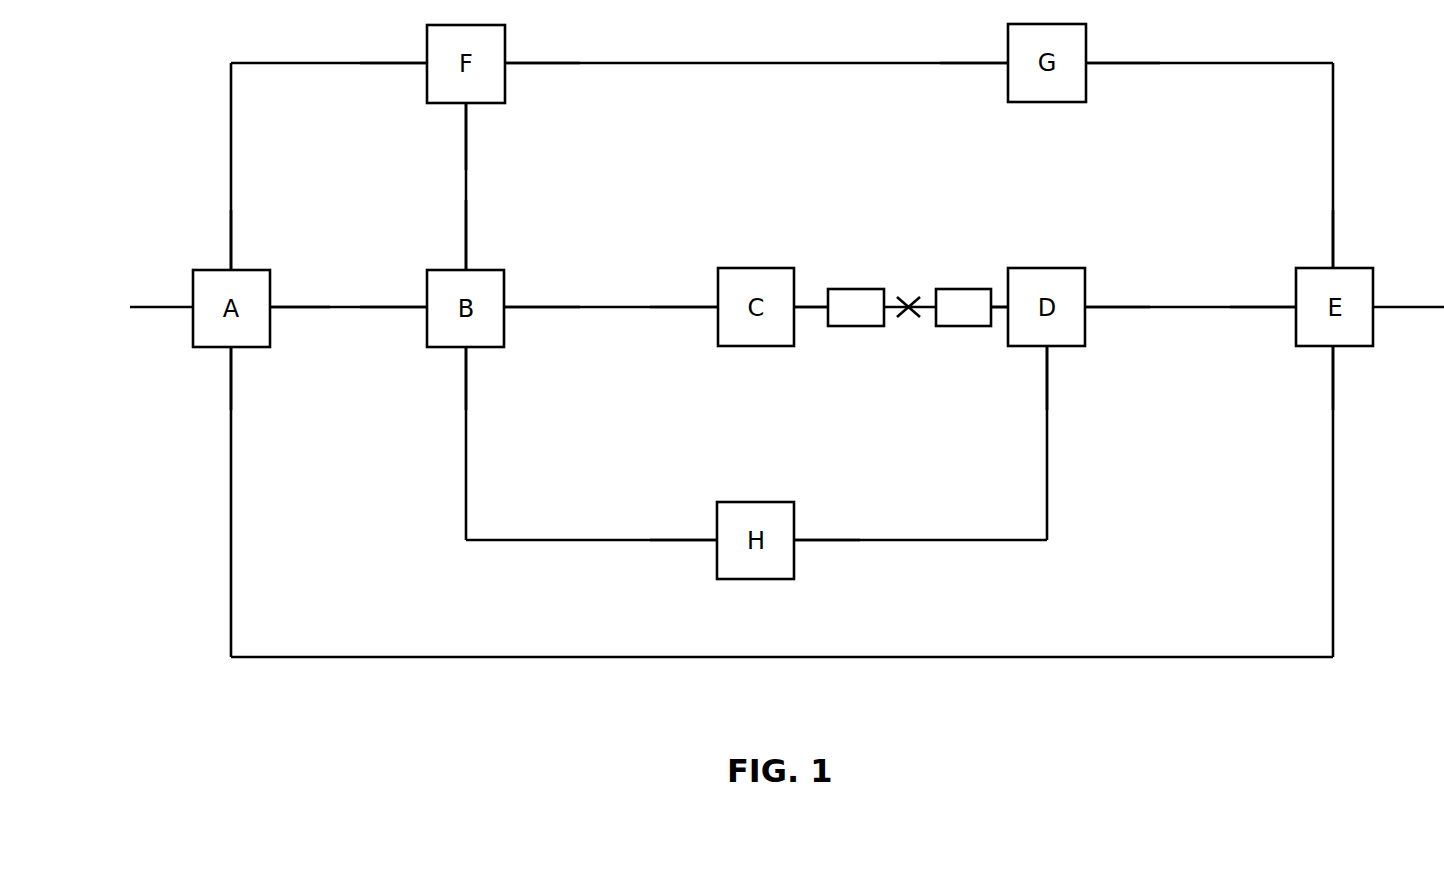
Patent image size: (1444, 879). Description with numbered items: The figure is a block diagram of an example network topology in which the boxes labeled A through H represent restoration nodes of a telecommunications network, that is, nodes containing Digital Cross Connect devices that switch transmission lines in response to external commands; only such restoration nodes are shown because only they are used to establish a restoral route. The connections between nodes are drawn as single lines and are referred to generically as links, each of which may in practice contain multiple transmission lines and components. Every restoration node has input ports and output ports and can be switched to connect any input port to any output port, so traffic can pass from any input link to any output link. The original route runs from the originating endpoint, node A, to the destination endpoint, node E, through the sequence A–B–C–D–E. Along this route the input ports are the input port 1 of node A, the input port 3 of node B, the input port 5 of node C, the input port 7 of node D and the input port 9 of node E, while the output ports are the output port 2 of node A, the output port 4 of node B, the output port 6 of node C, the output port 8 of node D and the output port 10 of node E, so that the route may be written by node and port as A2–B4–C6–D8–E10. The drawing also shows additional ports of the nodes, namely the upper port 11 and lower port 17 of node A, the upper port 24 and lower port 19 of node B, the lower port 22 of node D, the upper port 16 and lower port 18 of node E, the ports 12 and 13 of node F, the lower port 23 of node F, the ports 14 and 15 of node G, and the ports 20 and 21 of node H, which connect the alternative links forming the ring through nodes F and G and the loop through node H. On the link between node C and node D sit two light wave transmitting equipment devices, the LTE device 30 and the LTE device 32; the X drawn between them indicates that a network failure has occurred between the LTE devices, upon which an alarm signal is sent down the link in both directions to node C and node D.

The input port 1 is at (193, 306).
The output port 2 is at (271, 306).
The input port 3 is at (427, 306).
The output port 4 is at (505, 306).
The input port 5 is at (717, 306).
The output port 6 is at (795, 306).
The input port 7 is at (1007, 306).
The output port 8 is at (1086, 306).
The input port 9 is at (1295, 306).
The output port 10 is at (1374, 306).
The upper port of node A 11 is at (230, 268).
The left port of node F 12 is at (426, 62).
The right port of node F 13 is at (506, 62).
The left port of node G 14 is at (1007, 62).
The right port of node G 15 is at (1087, 62).
The upper port of node E 16 is at (1334, 267).
The lower port of node A 17 is at (230, 348).
The lower port of node E 18 is at (1334, 347).
The lower port of node B 19 is at (465, 348).
The left port of node H 20 is at (716, 539).
The right port of node H 21 is at (795, 539).
The lower port of node D 22 is at (1045, 347).
The lower port of node F 23 is at (465, 104).
The upper port of node B 24 is at (465, 268).
The light wave transmitting equipment device 30 is at (853, 327).
The light wave transmitting equipment device 32 is at (967, 327).